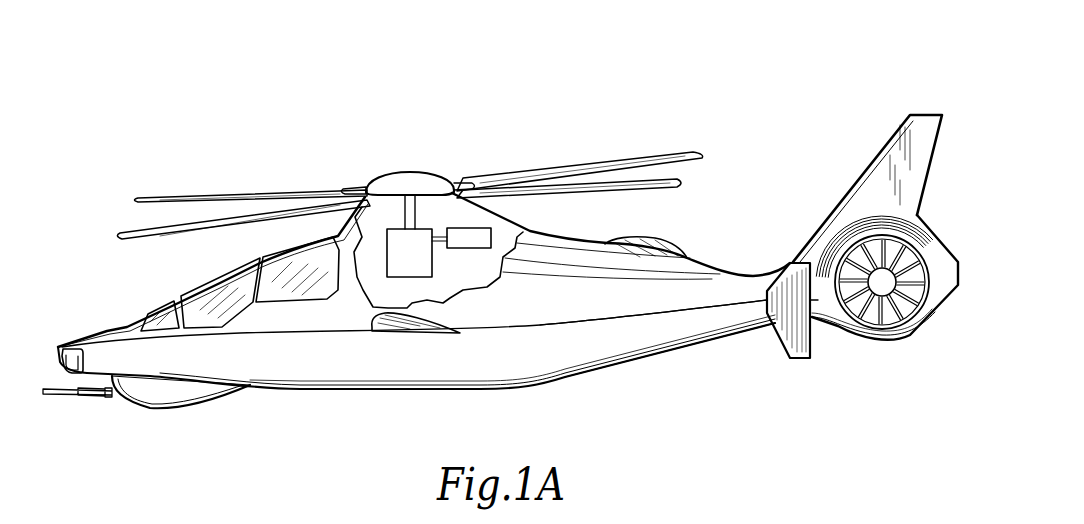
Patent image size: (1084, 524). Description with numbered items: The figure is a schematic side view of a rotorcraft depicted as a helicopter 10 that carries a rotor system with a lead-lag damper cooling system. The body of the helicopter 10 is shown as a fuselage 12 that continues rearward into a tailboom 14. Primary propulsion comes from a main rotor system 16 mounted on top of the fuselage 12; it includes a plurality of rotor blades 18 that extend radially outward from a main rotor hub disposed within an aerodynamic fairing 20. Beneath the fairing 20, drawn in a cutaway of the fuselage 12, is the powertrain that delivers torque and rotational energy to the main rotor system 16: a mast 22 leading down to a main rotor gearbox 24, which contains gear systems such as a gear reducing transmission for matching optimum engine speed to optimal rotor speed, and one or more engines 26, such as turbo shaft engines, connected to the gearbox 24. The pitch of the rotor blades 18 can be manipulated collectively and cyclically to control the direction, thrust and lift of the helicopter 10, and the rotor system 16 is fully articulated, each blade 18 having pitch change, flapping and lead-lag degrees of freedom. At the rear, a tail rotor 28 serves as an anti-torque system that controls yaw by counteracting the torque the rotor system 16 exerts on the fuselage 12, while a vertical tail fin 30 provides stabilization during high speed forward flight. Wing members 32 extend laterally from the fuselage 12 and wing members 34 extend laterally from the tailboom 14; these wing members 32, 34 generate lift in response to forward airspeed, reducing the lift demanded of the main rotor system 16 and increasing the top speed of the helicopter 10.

The helicopter 10 is at (574, 78).
The fuselage 12 is at (528, 372).
The tailboom 14 is at (737, 325).
The main rotor system 16 is at (396, 171).
The rotor blades 18 is at (632, 158).
The aerodynamic fairing 20 is at (426, 180).
The mast 22 is at (418, 213).
The main rotor gearbox 24 is at (417, 253).
The engines 26 is at (477, 236).
The tail rotor 28 is at (888, 318).
The vertical tail fin 30 is at (888, 168).
The wing members 32 is at (393, 334).
The wing members 34 is at (805, 333).